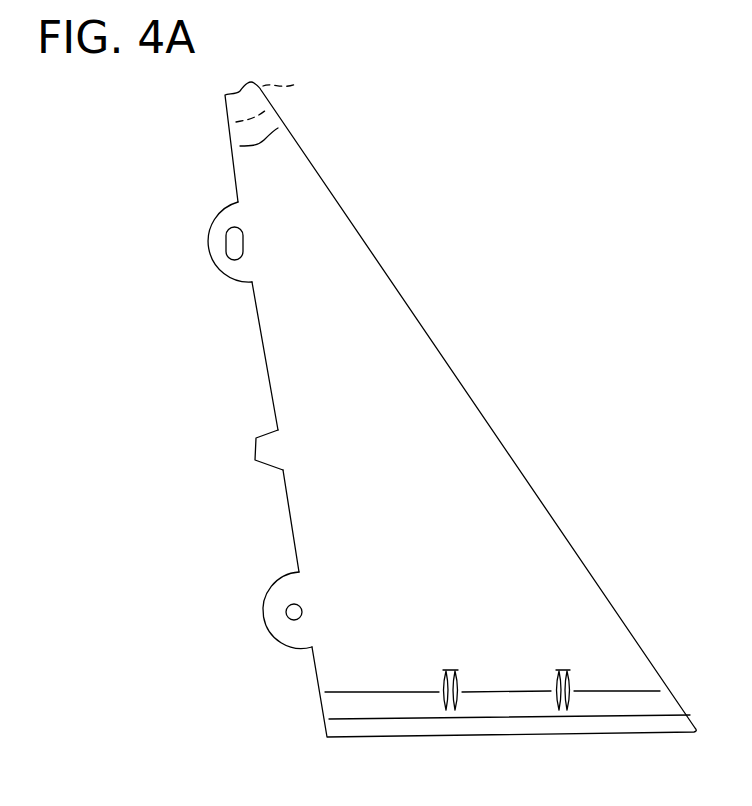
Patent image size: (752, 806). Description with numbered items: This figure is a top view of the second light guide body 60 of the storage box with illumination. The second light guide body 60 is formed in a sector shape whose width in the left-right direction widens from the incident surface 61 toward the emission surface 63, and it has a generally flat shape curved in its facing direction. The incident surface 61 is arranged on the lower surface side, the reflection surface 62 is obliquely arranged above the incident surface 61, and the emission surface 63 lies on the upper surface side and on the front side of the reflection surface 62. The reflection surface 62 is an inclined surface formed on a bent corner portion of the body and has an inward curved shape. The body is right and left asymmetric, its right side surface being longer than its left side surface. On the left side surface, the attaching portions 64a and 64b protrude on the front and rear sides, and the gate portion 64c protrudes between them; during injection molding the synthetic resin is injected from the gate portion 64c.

The second light guide body 60 is at (608, 71).
The incident surface 61 is at (296, 84).
The reflection surface 62 is at (270, 147).
The emission surface 63 is at (565, 734).
The attaching portion 64a is at (203, 245).
The attaching portion 64b is at (263, 610).
The gate portion 64c is at (256, 449).